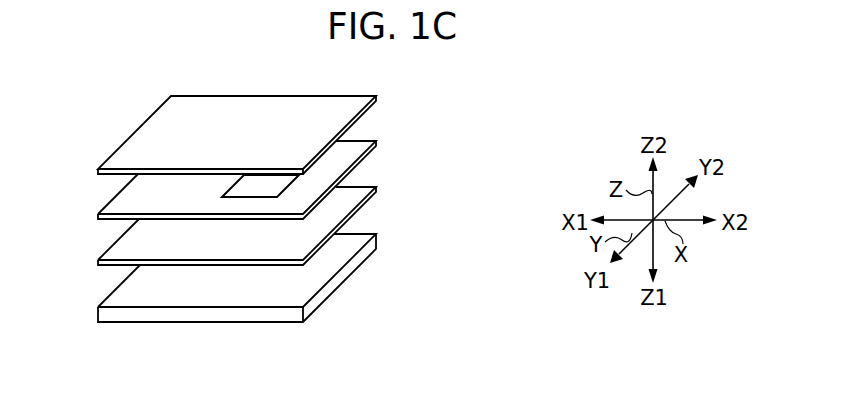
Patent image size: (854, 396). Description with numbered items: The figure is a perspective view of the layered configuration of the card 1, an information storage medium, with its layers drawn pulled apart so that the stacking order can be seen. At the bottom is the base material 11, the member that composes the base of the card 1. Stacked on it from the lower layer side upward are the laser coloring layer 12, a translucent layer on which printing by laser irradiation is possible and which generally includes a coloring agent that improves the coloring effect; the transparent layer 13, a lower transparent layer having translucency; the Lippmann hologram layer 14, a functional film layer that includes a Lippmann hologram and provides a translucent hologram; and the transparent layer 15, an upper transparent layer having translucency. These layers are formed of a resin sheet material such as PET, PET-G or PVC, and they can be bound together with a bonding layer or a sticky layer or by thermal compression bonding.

The card 1 is at (110, 100).
The base material 11 is at (357, 257).
The laser coloring layer 12 is at (359, 209).
The transparent layer 13 is at (357, 162).
The Lippmann hologram layer 14 is at (290, 186).
The transparent layer 15 is at (366, 116).